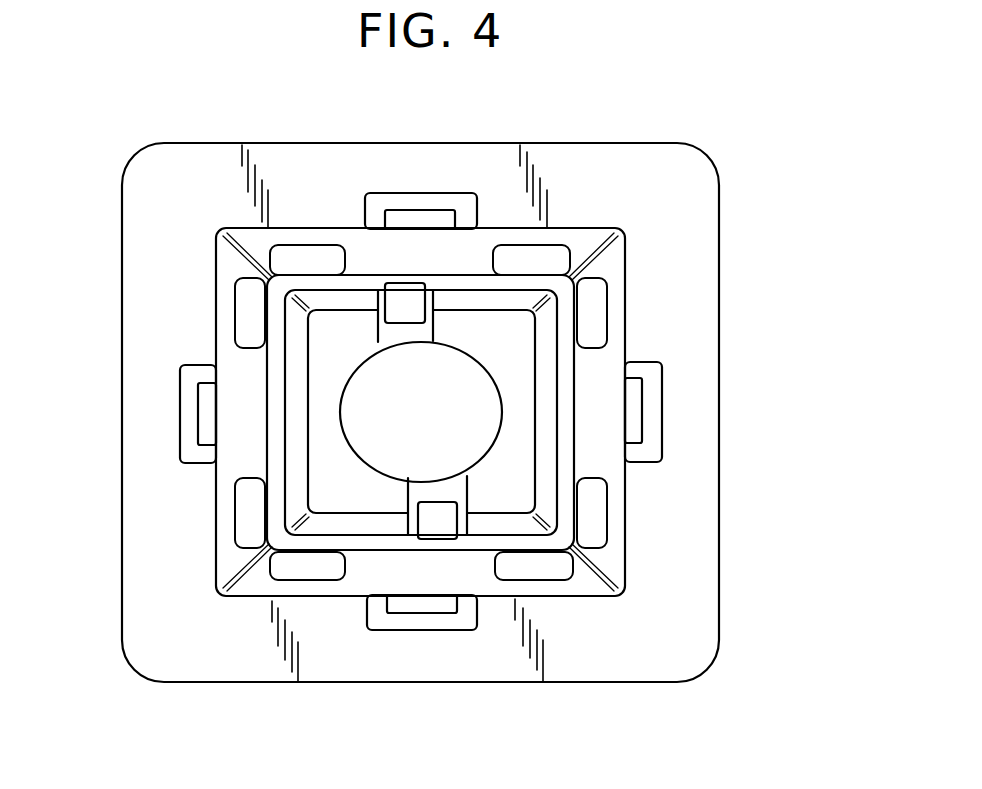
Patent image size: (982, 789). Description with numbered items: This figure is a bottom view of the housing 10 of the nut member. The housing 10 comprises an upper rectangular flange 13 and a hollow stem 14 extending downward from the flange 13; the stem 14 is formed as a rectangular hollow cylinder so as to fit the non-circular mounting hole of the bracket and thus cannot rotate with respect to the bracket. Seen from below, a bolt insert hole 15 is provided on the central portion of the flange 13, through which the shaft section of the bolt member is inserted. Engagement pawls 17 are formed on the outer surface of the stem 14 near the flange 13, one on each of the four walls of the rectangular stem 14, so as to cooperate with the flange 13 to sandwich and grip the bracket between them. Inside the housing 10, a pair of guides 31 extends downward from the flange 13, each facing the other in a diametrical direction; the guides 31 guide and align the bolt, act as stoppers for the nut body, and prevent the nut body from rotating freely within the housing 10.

The housing 10 is at (732, 145).
The flange 13 is at (555, 173).
The stem 14 is at (597, 255).
The bolt insert hole 15 is at (368, 457).
The engagement pawl 17 is at (405, 218).
The guide 31 is at (393, 333).